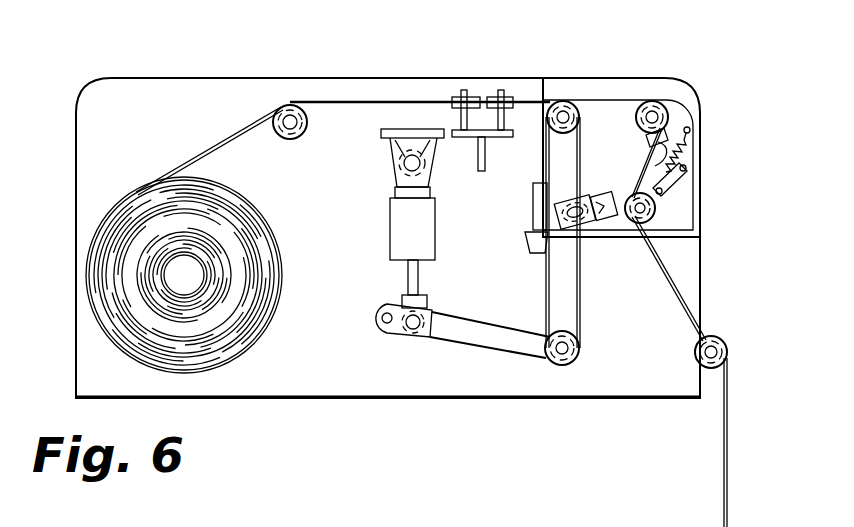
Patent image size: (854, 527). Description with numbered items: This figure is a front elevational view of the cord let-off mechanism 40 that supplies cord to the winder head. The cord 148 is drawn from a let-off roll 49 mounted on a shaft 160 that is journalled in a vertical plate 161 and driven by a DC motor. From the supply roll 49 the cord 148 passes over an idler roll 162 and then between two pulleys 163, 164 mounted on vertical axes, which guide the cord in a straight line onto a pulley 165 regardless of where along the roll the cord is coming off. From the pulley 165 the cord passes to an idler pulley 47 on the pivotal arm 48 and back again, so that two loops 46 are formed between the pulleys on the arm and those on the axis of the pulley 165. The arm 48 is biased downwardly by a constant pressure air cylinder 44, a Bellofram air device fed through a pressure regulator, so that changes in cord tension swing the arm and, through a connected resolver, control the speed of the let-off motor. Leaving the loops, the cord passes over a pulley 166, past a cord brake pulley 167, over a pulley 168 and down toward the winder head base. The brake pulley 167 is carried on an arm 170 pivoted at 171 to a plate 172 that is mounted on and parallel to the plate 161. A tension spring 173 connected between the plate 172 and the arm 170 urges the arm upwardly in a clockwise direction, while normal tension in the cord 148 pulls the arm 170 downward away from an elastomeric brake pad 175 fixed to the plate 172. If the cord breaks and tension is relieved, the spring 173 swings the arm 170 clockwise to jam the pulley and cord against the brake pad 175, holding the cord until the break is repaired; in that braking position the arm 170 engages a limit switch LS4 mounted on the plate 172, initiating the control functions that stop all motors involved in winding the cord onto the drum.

The tape transport assembly 40 is at (441, 478).
The constant pressure air cylinder 44 is at (420, 232).
The loops 46 is at (579, 283).
The idler pulleys 47 is at (581, 352).
The arm 48 is at (499, 307).
The let-off roll 49 is at (249, 324).
The cord 148 is at (382, 102).
The shaft 160 is at (184, 275).
The vertical plate 161 is at (172, 86).
The idler roll 162 is at (305, 137).
The pulley 163 is at (452, 97).
The pulley 164 is at (490, 97).
The pulley 165 is at (565, 103).
The pulley 166 is at (655, 102).
The cord brake pulley 167 is at (656, 211).
The pulley 168 is at (730, 346).
The arm 170 is at (686, 176).
The pivot 171 is at (676, 158).
The plate 172 is at (690, 94).
The tension spring 173 is at (692, 130).
The elastomeric brake pad 175 is at (612, 225).
The limit switch LS4 is at (640, 144).